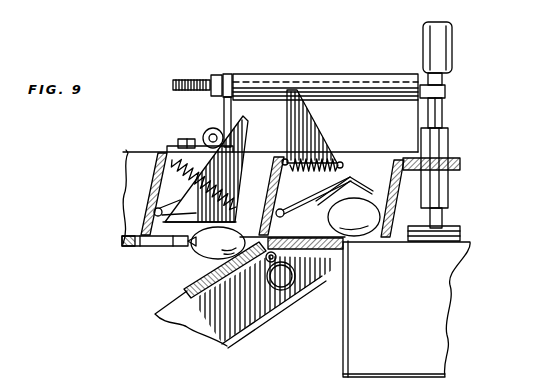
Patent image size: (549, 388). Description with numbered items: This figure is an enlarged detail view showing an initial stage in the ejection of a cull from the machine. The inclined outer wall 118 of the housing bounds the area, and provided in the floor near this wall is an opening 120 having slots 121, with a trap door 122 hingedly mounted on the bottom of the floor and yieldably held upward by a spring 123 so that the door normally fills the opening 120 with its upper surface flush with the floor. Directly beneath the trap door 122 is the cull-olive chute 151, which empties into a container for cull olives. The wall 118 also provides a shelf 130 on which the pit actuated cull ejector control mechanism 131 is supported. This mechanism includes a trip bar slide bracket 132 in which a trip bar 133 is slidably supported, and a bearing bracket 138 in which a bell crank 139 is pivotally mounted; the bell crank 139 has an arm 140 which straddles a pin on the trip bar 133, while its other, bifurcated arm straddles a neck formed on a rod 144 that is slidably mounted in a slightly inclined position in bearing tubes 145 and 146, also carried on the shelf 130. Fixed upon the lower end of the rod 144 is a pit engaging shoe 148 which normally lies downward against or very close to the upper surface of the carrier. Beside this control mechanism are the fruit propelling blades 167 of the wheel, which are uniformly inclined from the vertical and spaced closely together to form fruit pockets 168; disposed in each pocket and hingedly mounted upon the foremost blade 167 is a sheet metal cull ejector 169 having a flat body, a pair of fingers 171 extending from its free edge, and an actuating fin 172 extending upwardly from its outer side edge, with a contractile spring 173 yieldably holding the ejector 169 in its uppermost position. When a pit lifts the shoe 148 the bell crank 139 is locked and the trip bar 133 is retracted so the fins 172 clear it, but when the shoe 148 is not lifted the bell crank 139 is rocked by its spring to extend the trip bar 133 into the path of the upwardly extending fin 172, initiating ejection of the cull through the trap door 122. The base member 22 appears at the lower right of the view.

The base member 22 is at (440, 297).
The outer wall 118 is at (135, 167).
The opening 120 is at (187, 242).
The slots 121 is at (142, 245).
The trap door 122 is at (203, 284).
The spring 123 is at (296, 298).
The shelf 130 is at (460, 166).
The cull ejector control mechanism 131 is at (297, 72).
The trip bar slide bracket 132 is at (222, 134).
The trip bar 133 is at (205, 135).
The bearing bracket 138 is at (335, 78).
The bell crank 139 is at (446, 90).
The arm 140 is at (227, 104).
The rod 144 is at (442, 216).
The bearing tube 145 is at (452, 48).
The bearing tube 146 is at (440, 147).
The pit engaging shoe 148 is at (460, 236).
The cull-olive chute 151 is at (259, 332).
The fruit propelling blades 167 is at (152, 196).
The fruit pockets 168 is at (168, 221).
The cull ejector 169 is at (317, 200).
The fingers 171 is at (362, 190).
The actuating fin 172 is at (233, 169).
The contractile spring 173 is at (173, 162).